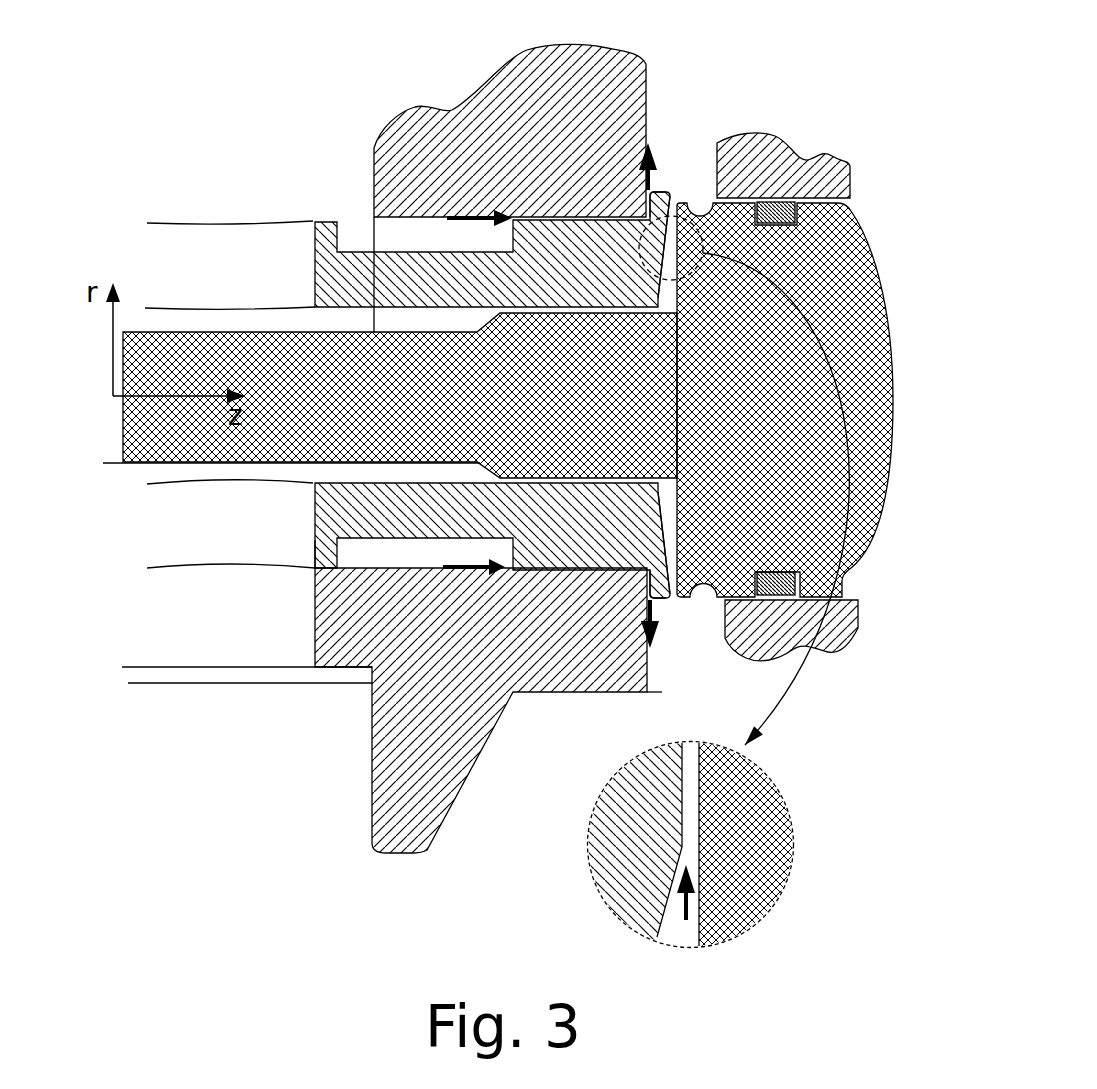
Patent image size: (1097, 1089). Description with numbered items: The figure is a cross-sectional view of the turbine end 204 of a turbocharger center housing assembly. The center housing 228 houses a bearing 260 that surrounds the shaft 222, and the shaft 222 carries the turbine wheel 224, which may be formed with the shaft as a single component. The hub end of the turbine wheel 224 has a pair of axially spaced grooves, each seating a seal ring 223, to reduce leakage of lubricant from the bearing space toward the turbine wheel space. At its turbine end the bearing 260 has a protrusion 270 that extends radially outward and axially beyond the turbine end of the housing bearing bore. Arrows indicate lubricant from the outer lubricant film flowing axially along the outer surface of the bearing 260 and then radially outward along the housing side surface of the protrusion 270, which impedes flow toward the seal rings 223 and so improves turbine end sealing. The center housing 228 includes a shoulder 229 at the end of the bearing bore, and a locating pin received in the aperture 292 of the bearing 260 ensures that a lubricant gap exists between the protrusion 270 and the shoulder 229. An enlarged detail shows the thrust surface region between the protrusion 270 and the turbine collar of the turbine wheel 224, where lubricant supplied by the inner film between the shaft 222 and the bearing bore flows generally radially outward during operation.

The turbine end 204 is at (752, 38).
The shaft 222 is at (568, 412).
The seal ring 223 is at (797, 215).
The turbine wheel 224 is at (768, 408).
The center housing 228 is at (556, 143).
The shoulder 229 is at (652, 192).
The bearing 260 is at (605, 275).
The protrusion 270 is at (673, 217).
The aperture 292 is at (316, 566).